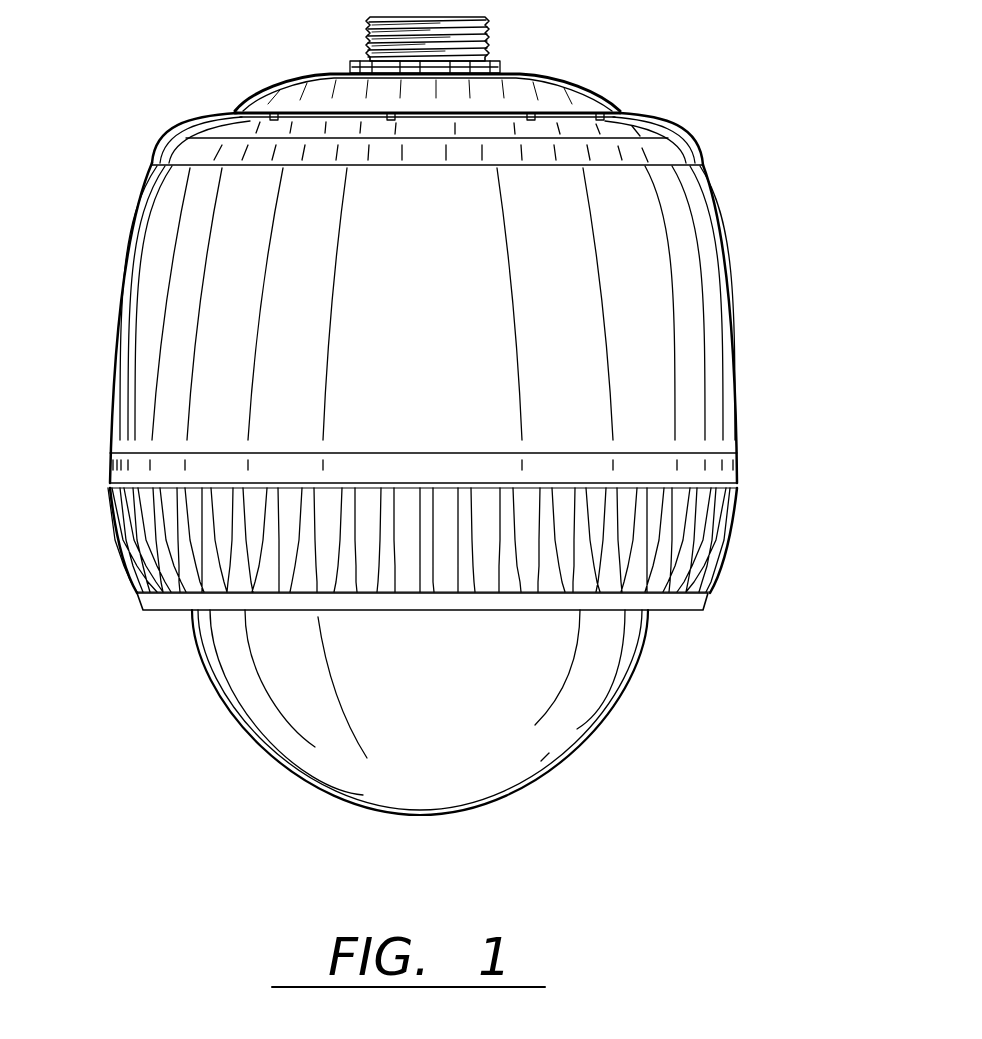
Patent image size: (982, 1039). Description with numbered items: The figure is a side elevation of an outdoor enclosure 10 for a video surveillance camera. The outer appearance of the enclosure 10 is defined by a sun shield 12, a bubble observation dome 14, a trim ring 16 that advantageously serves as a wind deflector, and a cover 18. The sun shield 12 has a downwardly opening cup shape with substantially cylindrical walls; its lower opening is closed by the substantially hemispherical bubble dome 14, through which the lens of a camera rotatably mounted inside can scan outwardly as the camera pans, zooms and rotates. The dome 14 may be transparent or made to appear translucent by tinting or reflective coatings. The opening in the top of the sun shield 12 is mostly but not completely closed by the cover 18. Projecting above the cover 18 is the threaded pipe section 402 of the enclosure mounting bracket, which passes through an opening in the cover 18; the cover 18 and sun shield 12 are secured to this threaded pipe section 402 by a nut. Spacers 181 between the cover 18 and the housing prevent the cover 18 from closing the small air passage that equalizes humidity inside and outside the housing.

The outdoor enclosure 10 is at (655, 121).
The sun shield 12 is at (722, 238).
The bubble observation dome 14 is at (622, 699).
The trim ring 16 is at (738, 522).
The cover 18 is at (284, 88).
The spacers 181 is at (237, 113).
The threaded pipe section 402 is at (493, 42).